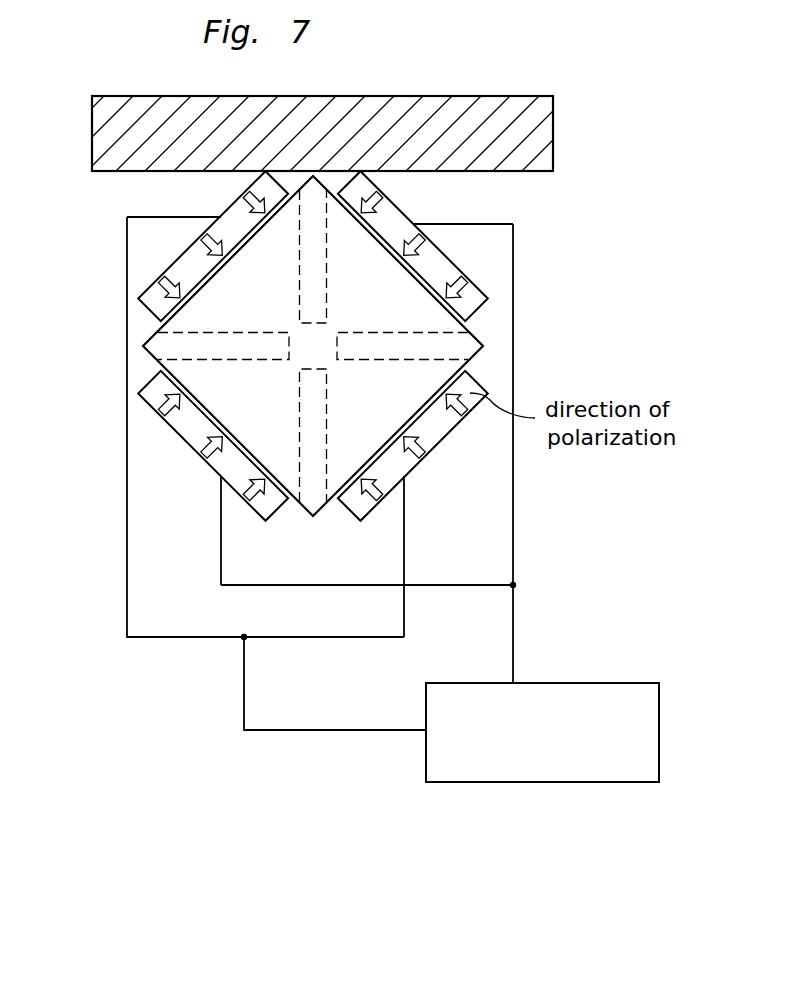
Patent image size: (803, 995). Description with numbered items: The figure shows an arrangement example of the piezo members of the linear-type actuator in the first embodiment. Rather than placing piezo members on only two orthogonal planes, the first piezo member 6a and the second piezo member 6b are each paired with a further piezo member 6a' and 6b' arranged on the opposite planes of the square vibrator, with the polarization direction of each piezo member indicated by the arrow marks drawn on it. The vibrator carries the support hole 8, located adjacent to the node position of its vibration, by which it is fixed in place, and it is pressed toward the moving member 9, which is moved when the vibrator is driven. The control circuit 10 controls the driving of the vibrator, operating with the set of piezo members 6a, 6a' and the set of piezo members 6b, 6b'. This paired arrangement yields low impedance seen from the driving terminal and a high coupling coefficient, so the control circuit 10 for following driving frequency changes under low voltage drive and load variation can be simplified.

The moving member 9 is at (453, 96).
The support hole 8 is at (263, 346).
The first piezo member 6a is at (170, 478).
The second piezo member 6b is at (453, 504).
The piezo member 6a' is at (455, 246).
The piezo member 6b' is at (181, 246).
The control circuit 10 is at (424, 761).